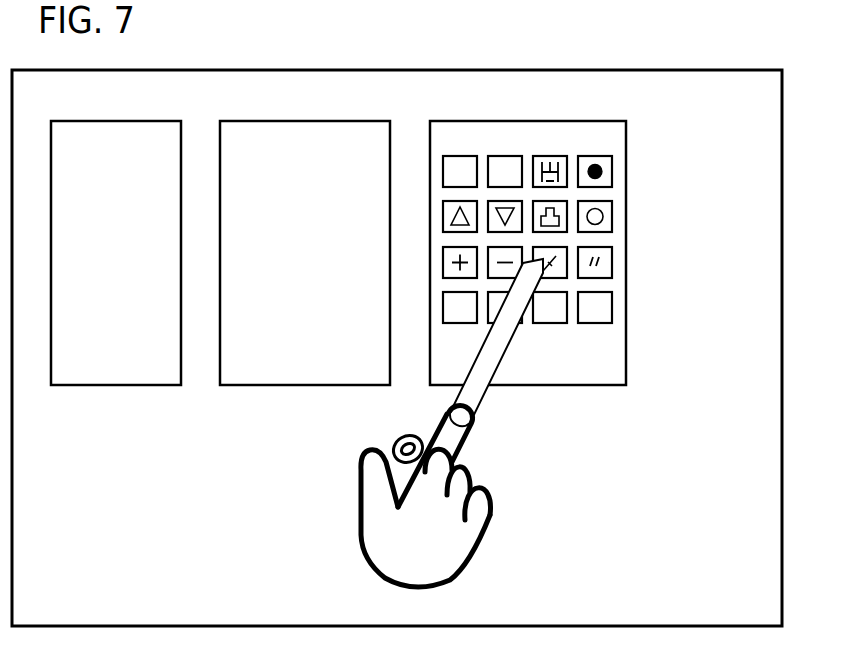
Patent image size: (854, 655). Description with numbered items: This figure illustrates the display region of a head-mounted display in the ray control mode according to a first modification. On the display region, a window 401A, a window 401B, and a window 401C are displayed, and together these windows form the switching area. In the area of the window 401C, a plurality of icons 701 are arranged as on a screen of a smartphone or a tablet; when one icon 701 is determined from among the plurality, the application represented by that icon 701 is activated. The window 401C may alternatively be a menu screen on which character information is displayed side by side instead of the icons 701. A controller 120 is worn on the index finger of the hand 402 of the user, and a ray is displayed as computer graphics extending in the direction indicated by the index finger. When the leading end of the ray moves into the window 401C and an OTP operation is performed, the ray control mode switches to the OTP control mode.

The window 401A is at (90, 386).
The window 401B is at (273, 386).
The window 401C is at (608, 386).
The icon 701 is at (595, 321).
The controller 120 is at (393, 443).
The hand 402 is at (402, 560).